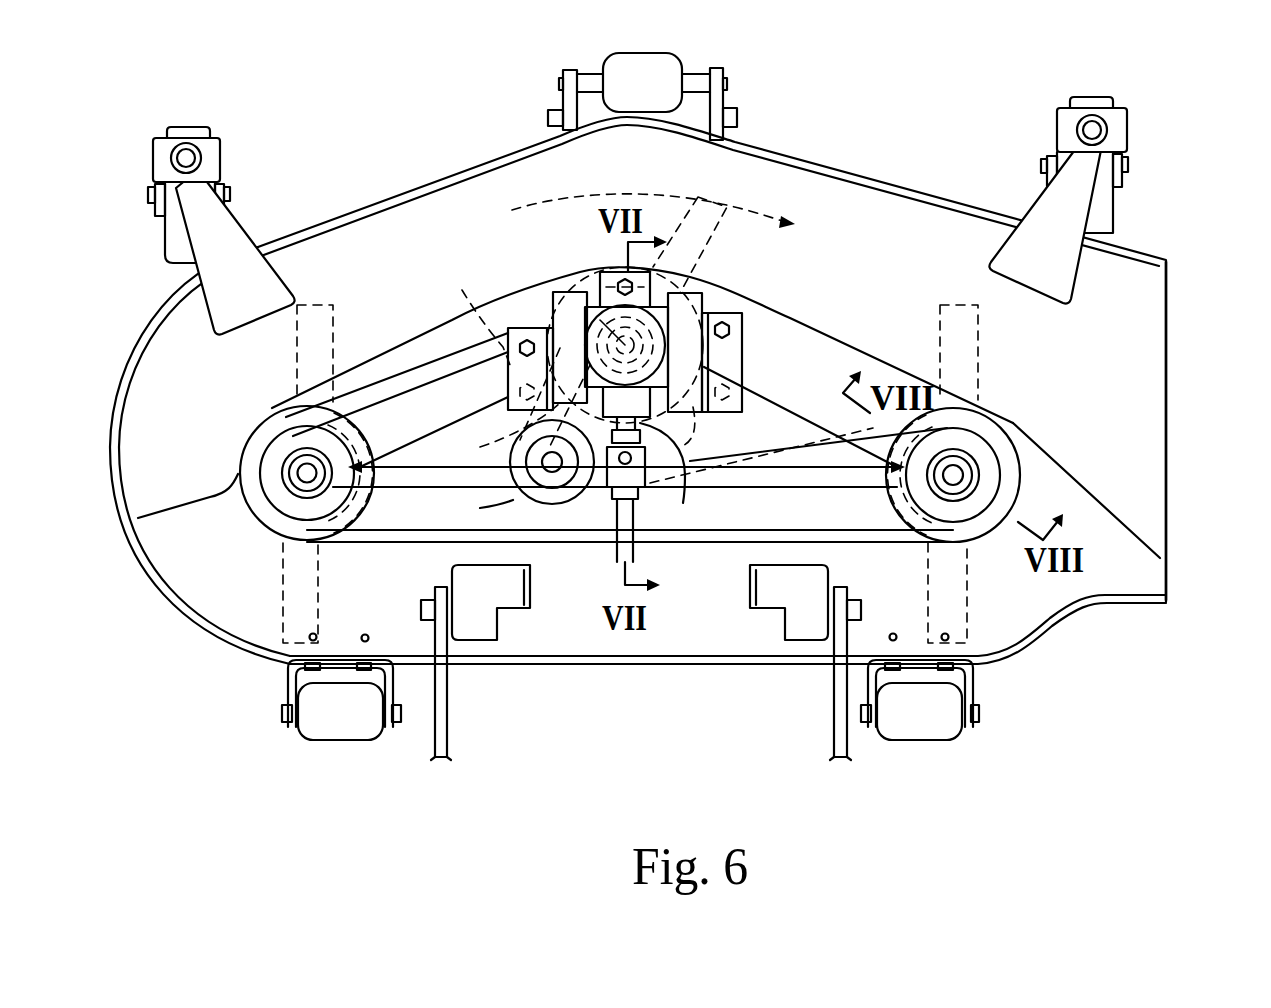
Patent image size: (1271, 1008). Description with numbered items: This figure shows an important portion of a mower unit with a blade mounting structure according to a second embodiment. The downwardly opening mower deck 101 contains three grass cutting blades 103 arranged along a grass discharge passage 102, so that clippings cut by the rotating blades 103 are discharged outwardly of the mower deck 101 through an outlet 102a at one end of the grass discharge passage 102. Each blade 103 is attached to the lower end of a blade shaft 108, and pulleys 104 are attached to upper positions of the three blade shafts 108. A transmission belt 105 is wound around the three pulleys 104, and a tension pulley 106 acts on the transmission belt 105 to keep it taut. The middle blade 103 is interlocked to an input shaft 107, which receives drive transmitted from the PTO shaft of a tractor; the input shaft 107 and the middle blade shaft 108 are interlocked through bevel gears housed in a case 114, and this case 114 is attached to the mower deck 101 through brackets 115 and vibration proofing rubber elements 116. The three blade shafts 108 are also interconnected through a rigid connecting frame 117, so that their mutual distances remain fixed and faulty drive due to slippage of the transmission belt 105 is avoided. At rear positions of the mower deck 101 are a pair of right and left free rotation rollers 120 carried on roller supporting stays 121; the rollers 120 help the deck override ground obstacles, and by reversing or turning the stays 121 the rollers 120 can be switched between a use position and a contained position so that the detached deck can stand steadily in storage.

The mower deck 101 is at (393, 220).
The grass discharge passage 102 is at (522, 205).
The outlet 102a is at (1175, 366).
The grass cutting blade 103 is at (297, 348).
The pulley 104 is at (265, 513).
The transmission belt 105 is at (443, 353).
The tension pulley 106 is at (520, 497).
The input shaft 107 is at (642, 462).
The blade shaft 108 is at (307, 473).
The case 114 is at (535, 287).
The bracket 115 is at (507, 373).
The vibration proofing rubber element 116 is at (485, 318).
The rigid connecting frame 117 is at (392, 433).
The free rotation roller 120 is at (327, 735).
The roller supporting stay 121 is at (288, 683).